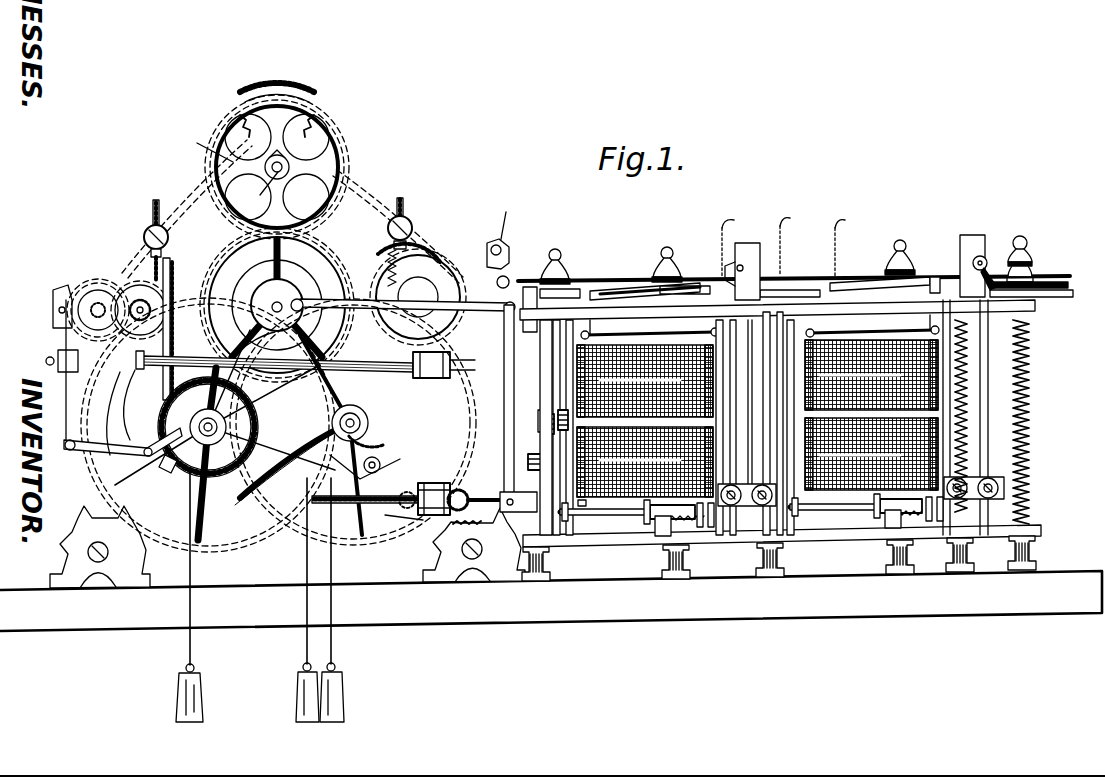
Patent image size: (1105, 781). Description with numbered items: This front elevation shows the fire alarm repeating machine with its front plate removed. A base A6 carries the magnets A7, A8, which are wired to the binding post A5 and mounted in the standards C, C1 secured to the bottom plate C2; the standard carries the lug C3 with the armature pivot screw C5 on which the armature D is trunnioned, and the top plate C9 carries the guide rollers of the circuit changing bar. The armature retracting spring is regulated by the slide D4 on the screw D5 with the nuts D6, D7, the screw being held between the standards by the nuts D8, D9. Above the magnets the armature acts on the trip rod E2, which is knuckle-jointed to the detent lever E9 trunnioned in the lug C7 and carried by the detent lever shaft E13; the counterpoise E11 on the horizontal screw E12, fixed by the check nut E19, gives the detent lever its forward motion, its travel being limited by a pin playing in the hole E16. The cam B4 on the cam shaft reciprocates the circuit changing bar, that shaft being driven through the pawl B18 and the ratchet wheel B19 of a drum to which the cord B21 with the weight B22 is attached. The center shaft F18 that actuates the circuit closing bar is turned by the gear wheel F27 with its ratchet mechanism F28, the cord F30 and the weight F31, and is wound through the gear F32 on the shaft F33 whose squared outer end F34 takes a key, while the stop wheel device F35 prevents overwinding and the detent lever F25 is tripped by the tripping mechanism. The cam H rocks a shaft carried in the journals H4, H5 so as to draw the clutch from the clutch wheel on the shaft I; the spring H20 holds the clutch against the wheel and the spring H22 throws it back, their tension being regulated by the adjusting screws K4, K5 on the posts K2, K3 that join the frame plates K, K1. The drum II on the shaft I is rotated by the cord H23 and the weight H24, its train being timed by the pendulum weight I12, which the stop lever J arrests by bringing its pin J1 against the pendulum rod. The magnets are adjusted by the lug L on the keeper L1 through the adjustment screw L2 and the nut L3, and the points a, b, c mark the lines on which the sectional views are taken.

The binding post A5 is at (688, 572).
The base A6 is at (551, 601).
The magnet A7 is at (757, 378).
The magnet A8 is at (757, 457).
The cam B4 is at (414, 290).
The pawl B18 is at (365, 470).
The ratchet wheel B19 is at (368, 450).
The cord B21 is at (336, 650).
The weight B22 is at (345, 692).
The standard C is at (556, 400).
The standard C1 is at (714, 404).
The bottom plate C2 is at (782, 544).
The lug C3 is at (861, 502).
The armature pivot screw C5 is at (738, 486).
The lug C7 is at (518, 498).
The top plate C9 is at (658, 320).
The armature D is at (725, 366).
The slide D4 is at (660, 530).
The screw D5 is at (721, 515).
The nut D6 is at (770, 513).
The nut D7 is at (702, 528).
The nut D8 is at (580, 502).
The nut D9 is at (716, 527).
The trip rod E2 is at (694, 279).
The detent lever E9 is at (507, 380).
The counterpoise E11 is at (422, 522).
The screw E12 is at (364, 510).
The detent lever shaft E13 is at (490, 524).
The hole E16 is at (436, 500).
The check nut E19 is at (470, 494).
The center shaft F18 is at (283, 308).
The detent lever F25 is at (255, 392).
The gear wheel F27 is at (322, 258).
The ratchet mechanism F28 is at (255, 342).
The cord F30 is at (303, 655).
The weight F31 is at (296, 700).
The gear F32 is at (202, 145).
The shaft F33 is at (257, 191).
The squared end F34 is at (290, 163).
The stop wheel device F35 is at (277, 110).
The cam H is at (418, 297).
The journal H4 is at (140, 386).
The journal H5 is at (424, 378).
The spring H20 is at (392, 276).
The spring H22 is at (174, 275).
The cord H23 is at (186, 655).
The weight H24 is at (176, 708).
The shaft I is at (786, 268).
The drum II is at (963, 385).
The weight I12 is at (58, 370).
The lever J is at (64, 448).
The pin J1 is at (79, 413).
The front frame plate K is at (287, 547).
The frame plate K1 is at (279, 307).
The post K2 is at (150, 232).
The post K3 is at (412, 228).
The adjusting screw K4 is at (157, 205).
The adjusting screw K5 is at (405, 200).
The lug L is at (554, 427).
The keeper L1 is at (578, 380).
The adjustment screw L2 is at (546, 414).
The nut L3 is at (536, 452).
The section line point a is at (723, 243).
The section line point b is at (780, 242).
The section line point c is at (835, 243).